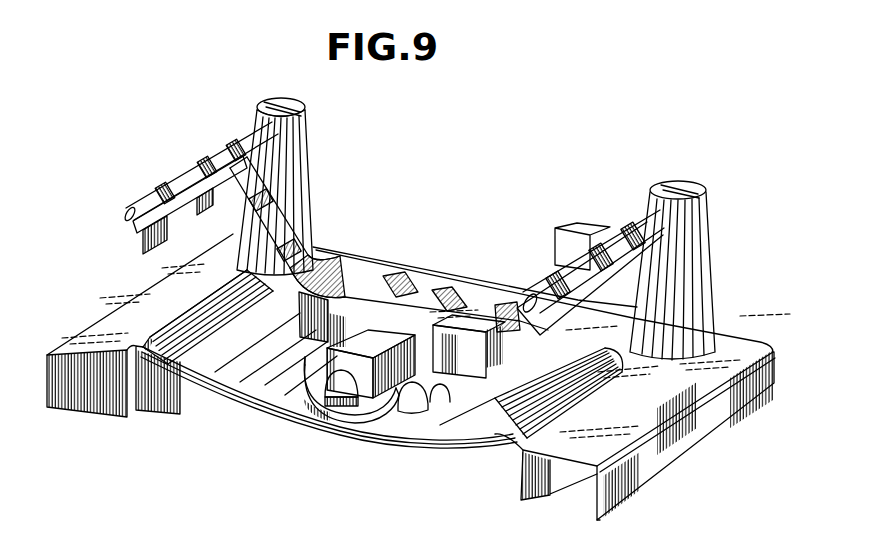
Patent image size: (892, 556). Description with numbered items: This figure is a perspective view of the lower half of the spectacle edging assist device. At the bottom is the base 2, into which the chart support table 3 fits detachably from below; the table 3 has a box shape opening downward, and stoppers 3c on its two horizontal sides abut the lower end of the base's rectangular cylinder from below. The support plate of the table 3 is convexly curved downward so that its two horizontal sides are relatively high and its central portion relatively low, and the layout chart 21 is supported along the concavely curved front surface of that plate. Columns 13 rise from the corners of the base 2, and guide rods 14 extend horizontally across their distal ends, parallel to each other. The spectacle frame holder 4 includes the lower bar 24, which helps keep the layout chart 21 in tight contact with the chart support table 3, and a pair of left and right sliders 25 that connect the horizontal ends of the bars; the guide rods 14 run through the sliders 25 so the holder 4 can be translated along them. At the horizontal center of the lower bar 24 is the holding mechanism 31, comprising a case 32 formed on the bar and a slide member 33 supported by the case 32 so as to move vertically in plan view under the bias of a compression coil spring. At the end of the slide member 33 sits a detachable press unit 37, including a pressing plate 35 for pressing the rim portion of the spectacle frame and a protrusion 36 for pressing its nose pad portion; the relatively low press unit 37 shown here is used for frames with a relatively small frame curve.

The base 2 is at (48, 380).
The chart support table 3 is at (147, 350).
The stoppers 3c is at (556, 497).
The spectacle frame holder 4 is at (296, 222).
The columns 13 is at (310, 136).
The guide rods 14 is at (250, 140).
The layout chart 21 is at (243, 380).
The lower bar 24 is at (492, 320).
The sliders 25 is at (190, 205).
The holding mechanism 31 is at (368, 305).
The case 32 is at (400, 318).
The slide member 33 is at (455, 375).
The pressing plate 35 is at (347, 413).
The protrusion 36 is at (305, 426).
The press unit 37 is at (372, 418).